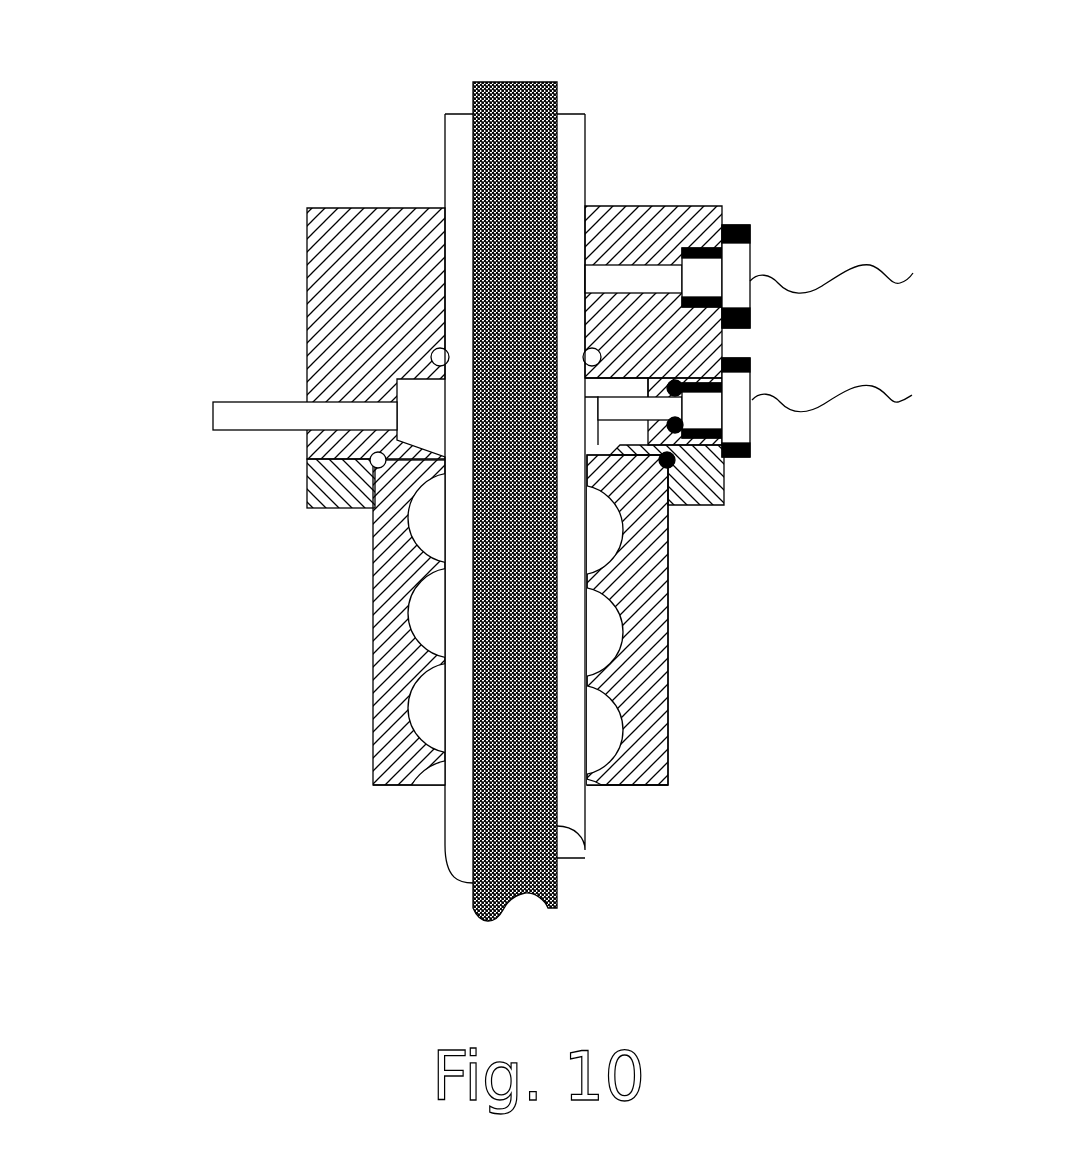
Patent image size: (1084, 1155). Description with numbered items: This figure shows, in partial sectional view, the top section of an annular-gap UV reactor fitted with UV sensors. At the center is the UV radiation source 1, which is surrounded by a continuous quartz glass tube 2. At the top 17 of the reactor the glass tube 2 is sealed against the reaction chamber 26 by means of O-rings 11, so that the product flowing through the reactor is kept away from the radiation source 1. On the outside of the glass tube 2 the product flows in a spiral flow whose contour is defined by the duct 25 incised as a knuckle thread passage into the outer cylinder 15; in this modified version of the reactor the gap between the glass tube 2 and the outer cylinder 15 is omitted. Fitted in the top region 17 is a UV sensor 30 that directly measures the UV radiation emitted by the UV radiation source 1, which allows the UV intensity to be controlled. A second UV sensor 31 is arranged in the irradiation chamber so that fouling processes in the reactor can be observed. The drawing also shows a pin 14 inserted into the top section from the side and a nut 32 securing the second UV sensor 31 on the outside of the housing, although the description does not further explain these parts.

The UV radiation source 1 is at (583, 148).
The quartz glass tube 2 is at (583, 195).
The O-rings 11 is at (427, 353).
The pin 14 is at (278, 405).
The outer cylinder 15 is at (668, 633).
The top 17 is at (390, 268).
The duct 25 is at (643, 722).
The reaction chamber 26 is at (418, 712).
The UV sensor 30 is at (625, 278).
The second UV sensor 31 is at (665, 413).
The nut 32 is at (722, 380).